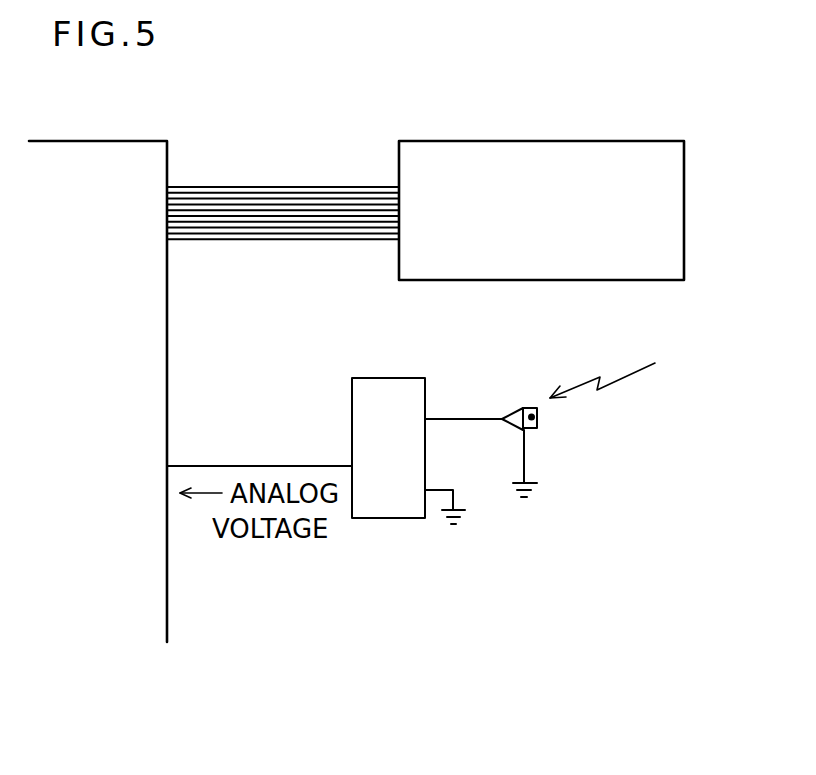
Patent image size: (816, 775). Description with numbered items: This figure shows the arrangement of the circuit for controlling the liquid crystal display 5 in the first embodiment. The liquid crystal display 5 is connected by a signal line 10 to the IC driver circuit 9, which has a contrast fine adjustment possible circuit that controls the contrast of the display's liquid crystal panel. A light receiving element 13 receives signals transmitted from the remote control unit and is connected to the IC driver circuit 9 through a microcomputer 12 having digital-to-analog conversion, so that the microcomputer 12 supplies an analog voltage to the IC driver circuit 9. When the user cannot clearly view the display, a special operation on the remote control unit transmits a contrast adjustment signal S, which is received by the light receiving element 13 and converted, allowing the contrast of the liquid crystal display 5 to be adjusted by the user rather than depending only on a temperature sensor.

The liquid crystal display 5 is at (532, 141).
The IC driver circuit 9 is at (167, 598).
The signal line 10 is at (316, 200).
The microcomputer 12 is at (365, 402).
The light receiving element 13 is at (511, 403).
The contrast adjustment signal S is at (640, 372).